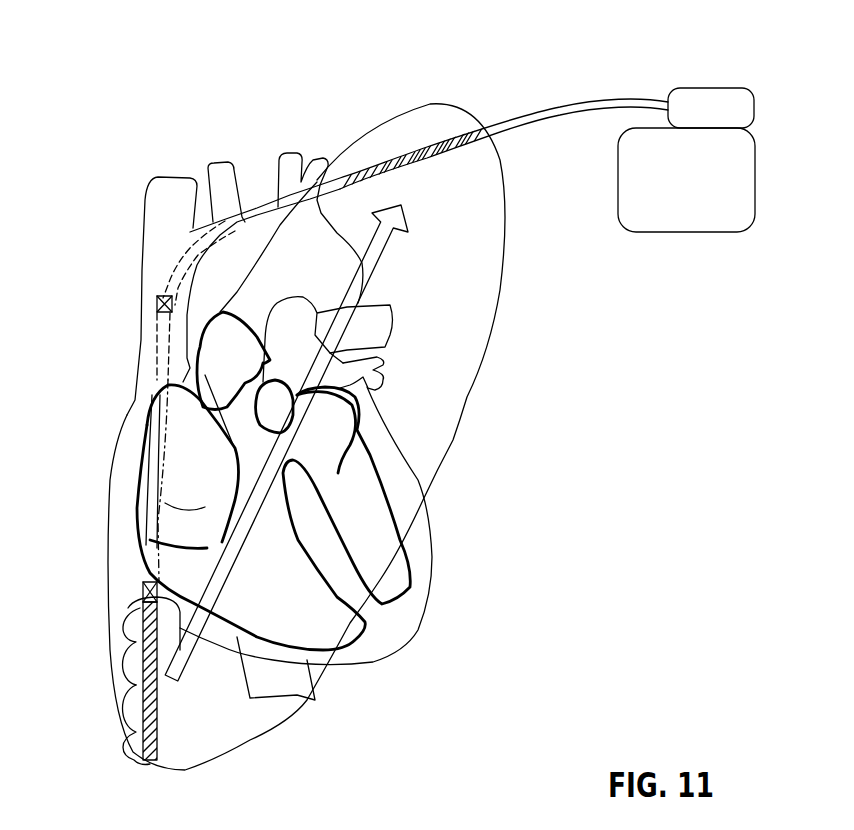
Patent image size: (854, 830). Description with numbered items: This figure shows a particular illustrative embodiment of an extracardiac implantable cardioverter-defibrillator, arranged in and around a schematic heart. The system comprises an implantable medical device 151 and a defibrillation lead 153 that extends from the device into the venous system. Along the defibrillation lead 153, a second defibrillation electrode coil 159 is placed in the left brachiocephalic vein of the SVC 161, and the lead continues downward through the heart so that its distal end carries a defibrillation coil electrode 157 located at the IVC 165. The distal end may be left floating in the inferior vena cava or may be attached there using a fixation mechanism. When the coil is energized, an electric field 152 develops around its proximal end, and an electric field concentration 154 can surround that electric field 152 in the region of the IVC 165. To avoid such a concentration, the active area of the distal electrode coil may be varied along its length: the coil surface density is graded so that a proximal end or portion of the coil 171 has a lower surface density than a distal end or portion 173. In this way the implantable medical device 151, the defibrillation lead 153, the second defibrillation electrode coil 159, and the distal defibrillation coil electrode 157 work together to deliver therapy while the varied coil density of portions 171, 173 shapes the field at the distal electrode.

The implantable medical device 151 is at (691, 284).
The electric field 152 is at (383, 262).
The defibrillation lead 153 is at (602, 100).
The electric field concentration 154 is at (496, 300).
The defibrillation coil electrode 157 is at (157, 683).
The second defibrillation electrode coil 159 is at (428, 146).
The SVC 161 is at (141, 260).
The IVC 165 is at (130, 588).
The proximal end or portion of the coil 171 is at (128, 648).
The distal end or portion 173 is at (133, 725).